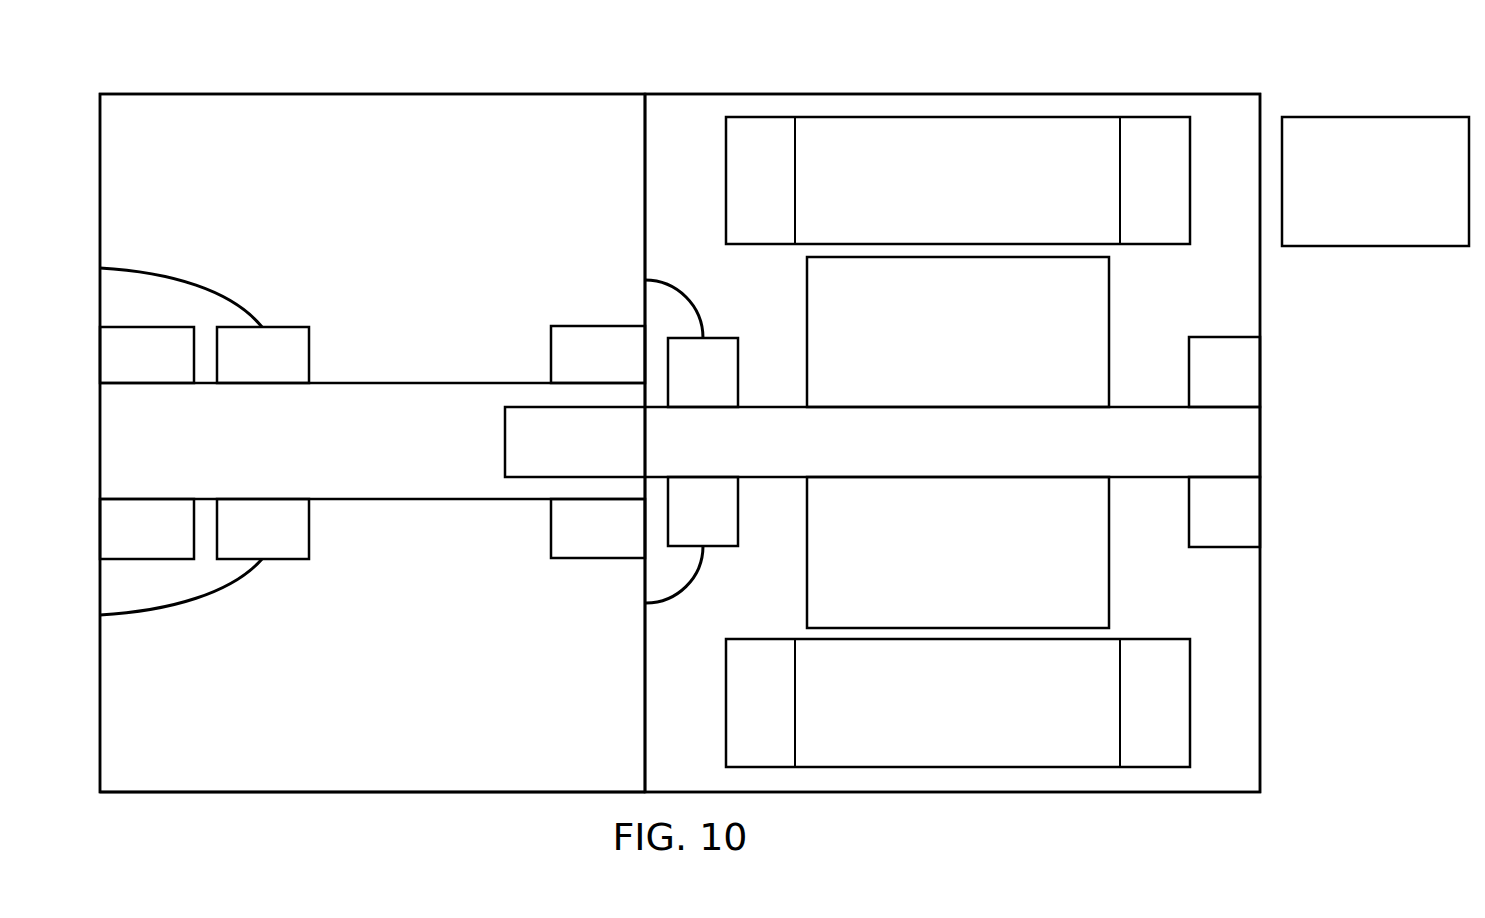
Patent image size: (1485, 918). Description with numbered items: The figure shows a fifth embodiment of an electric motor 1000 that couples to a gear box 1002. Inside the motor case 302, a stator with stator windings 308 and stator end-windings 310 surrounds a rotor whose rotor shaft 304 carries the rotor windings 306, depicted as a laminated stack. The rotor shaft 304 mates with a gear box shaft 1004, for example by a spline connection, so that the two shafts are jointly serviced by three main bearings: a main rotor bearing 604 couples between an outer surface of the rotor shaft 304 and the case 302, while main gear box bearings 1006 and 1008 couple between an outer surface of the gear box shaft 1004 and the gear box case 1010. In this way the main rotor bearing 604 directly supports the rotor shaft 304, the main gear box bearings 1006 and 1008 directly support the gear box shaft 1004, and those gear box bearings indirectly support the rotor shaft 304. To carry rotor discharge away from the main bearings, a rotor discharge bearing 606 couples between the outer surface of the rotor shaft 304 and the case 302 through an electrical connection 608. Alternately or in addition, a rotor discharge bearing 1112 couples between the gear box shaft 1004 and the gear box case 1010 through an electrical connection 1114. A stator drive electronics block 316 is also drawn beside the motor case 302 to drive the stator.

The electric motor 1000 is at (292, 66).
The gear box 1002 is at (344, 257).
The gear box shaft 1004 is at (428, 458).
The main gear box bearing 1006 is at (571, 368).
The main gear box bearing 1008 is at (177, 369).
The gear box case 1010 is at (369, 797).
The rotor discharge bearing 1112 is at (291, 369).
The electrical connection 1114 is at (170, 270).
The case 302 is at (1266, 635).
The rotor shaft 304 is at (1056, 458).
The rotor windings 306 is at (935, 600).
The stator windings 308 is at (935, 736).
The stator end-windings 310 is at (738, 199).
The stator drive electronics 316 is at (1353, 229).
The main rotor bearing 604 is at (1201, 386).
The rotor discharge bearing 606 is at (681, 386).
The electrical connection 608 is at (668, 280).